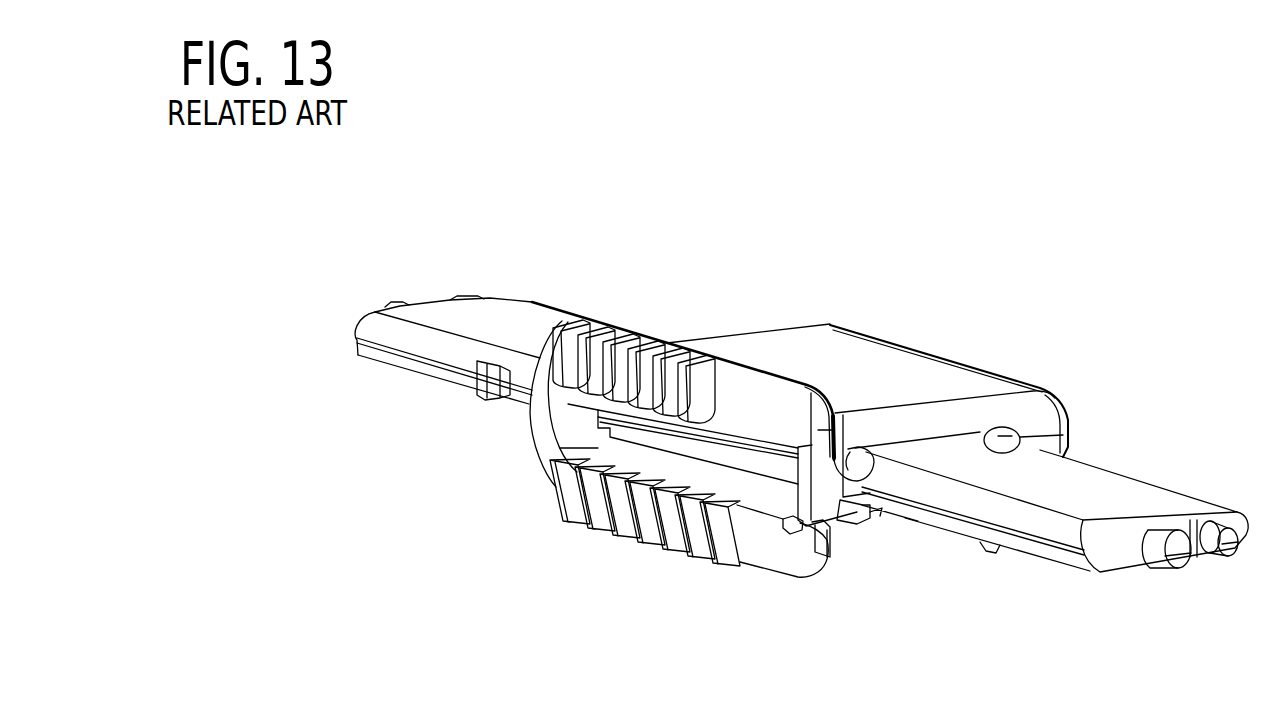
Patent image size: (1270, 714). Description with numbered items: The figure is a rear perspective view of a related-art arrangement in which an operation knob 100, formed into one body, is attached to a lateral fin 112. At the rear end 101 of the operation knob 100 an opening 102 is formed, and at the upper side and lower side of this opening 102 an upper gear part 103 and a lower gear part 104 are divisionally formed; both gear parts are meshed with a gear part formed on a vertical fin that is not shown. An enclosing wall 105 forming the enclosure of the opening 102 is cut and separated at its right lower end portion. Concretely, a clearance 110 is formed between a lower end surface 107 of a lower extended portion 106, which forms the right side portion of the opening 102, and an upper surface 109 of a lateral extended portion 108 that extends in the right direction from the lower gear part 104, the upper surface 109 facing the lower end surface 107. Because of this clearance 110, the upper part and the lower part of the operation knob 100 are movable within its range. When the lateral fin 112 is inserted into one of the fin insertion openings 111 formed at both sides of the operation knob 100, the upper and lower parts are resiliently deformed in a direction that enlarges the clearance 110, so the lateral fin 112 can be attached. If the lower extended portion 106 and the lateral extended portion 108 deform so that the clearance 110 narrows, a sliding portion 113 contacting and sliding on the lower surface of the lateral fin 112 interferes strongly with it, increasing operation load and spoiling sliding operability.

The operation knob 100 is at (700, 259).
The rear end 101 is at (543, 446).
The opening 102 is at (680, 473).
The upper gear part 103 is at (612, 343).
The lower gear part 104 is at (570, 523).
The enclosing wall 105 is at (777, 400).
The lower extended portion 106 is at (868, 477).
The lower end surface 107 is at (845, 522).
The lateral extended portion 108 is at (790, 547).
The upper surface 109 is at (817, 548).
The clearance 110 is at (796, 533).
The fin insertion opening 111 is at (1015, 447).
The lateral fin 112 is at (1128, 502).
The sliding portion 113 is at (880, 528).